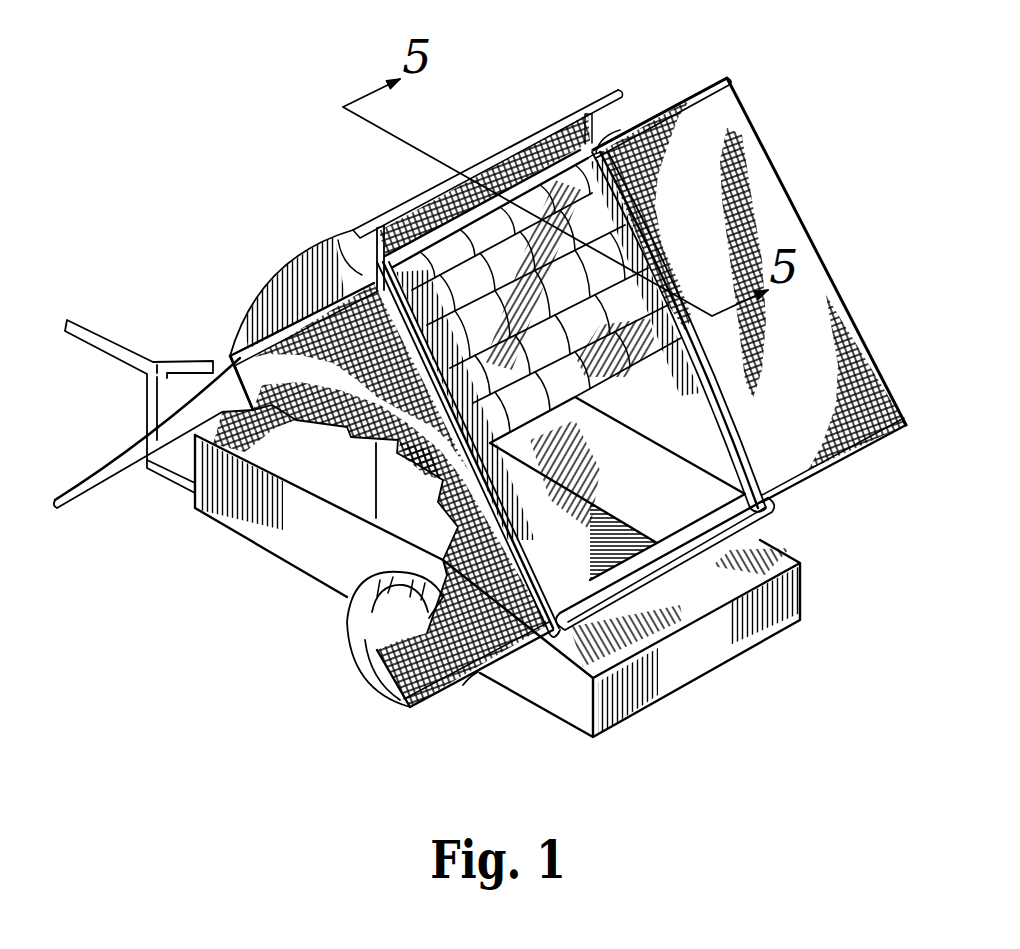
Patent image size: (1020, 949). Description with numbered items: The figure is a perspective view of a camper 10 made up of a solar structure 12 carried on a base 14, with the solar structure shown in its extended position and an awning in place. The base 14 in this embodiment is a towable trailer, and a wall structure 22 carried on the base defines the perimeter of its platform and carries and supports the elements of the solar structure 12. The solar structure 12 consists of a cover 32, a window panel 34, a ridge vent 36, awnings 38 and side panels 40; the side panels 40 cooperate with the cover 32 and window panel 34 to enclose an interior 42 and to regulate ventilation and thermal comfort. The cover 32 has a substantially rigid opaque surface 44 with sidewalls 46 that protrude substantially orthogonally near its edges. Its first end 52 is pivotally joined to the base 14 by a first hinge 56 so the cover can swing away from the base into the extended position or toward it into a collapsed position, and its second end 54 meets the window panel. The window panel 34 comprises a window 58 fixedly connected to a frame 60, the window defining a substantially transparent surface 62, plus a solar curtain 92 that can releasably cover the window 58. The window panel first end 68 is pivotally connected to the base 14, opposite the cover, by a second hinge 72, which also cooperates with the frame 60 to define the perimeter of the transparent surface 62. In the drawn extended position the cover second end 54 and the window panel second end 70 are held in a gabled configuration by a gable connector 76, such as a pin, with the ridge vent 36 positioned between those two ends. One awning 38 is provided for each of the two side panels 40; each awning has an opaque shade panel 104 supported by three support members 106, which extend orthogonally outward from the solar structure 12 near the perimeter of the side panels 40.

The camper 10 is at (312, 98).
The solar structure 12 is at (183, 279).
The base 14 is at (268, 580).
The wall structure 22 is at (197, 455).
The cover 32 is at (290, 290).
The window panel 34 is at (720, 414).
The ridge vent 36 is at (600, 135).
The awning 38 is at (770, 160).
The side panel 40 is at (355, 469).
The interior 42 is at (663, 501).
The opaque surface 44 is at (522, 133).
The sidewall 46 is at (250, 330).
The first end 52 is at (207, 362).
The second end 54 is at (363, 257).
The first hinge 56 is at (162, 437).
The window 58 is at (780, 497).
The frame 60 is at (497, 472).
The transparent surface 62 is at (683, 381).
The first end 68 is at (522, 545).
The second end 70 is at (617, 140).
The second hinge 72 is at (740, 551).
The gable connector 76 is at (335, 242).
The solar curtain 92 is at (567, 153).
The shade panel 104 is at (837, 315).
The support member 106 is at (710, 83).